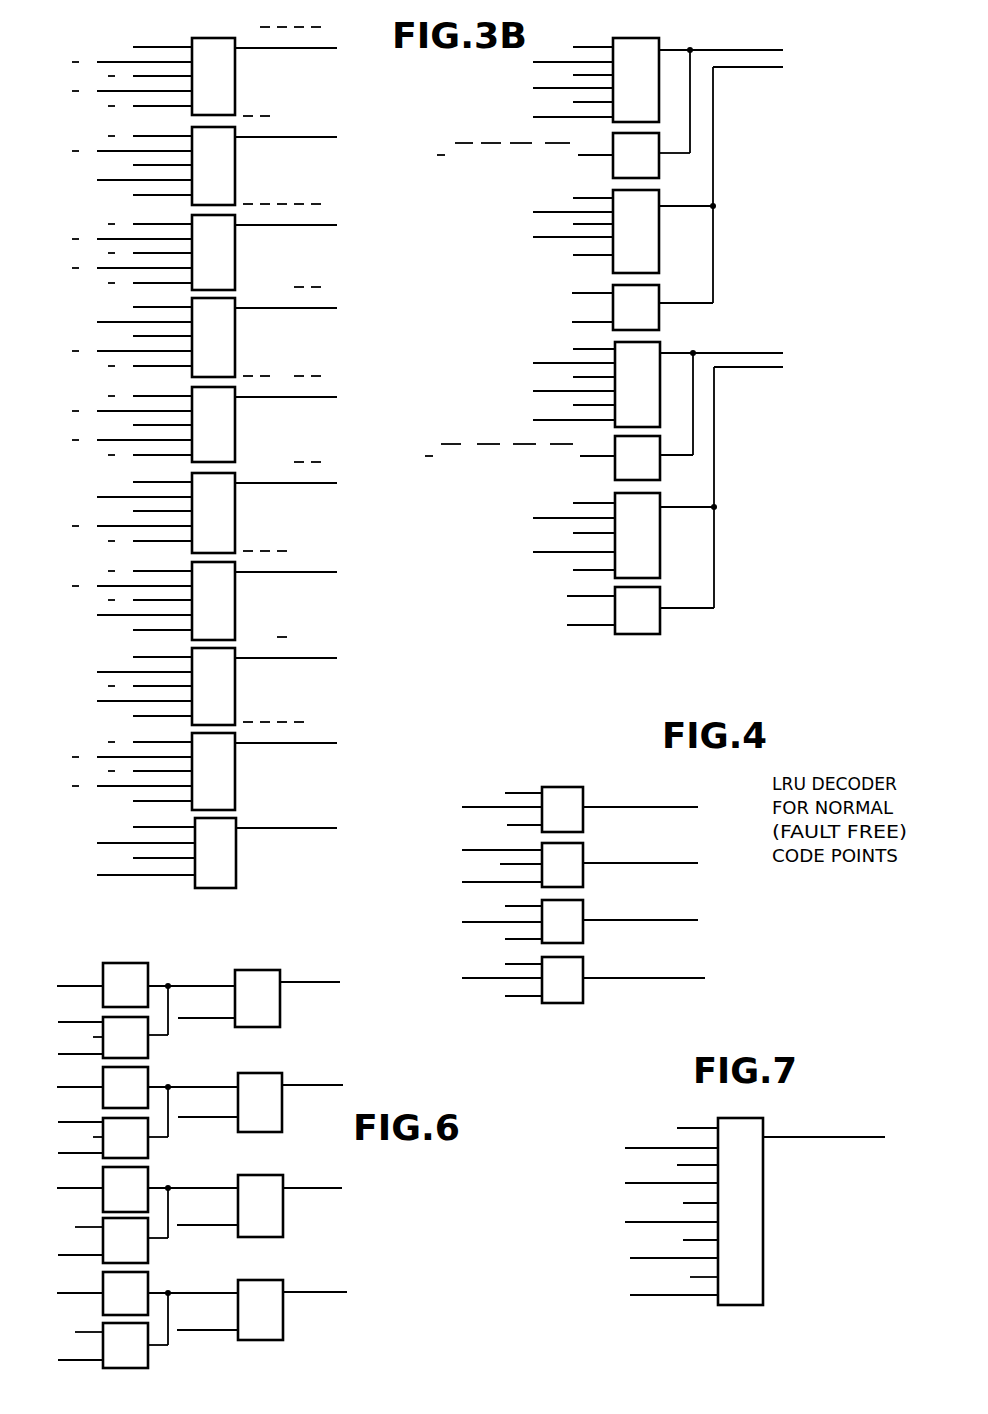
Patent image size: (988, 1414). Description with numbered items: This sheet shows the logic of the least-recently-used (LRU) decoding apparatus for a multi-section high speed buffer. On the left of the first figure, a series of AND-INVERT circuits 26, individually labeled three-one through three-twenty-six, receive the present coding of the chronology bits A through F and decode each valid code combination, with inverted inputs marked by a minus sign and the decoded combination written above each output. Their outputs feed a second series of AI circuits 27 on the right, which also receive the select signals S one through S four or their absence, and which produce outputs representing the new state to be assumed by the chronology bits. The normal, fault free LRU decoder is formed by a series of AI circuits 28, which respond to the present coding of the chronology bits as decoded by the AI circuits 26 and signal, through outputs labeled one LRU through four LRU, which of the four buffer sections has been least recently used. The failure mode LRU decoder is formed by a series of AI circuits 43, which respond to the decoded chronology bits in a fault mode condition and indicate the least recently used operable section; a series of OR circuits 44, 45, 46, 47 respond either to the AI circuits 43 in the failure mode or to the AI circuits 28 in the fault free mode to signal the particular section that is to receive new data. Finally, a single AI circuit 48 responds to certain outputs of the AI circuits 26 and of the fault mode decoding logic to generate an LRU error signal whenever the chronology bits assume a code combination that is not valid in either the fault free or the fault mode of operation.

In FIG. 3B, the AND-INVERT circuits 26 is at (186, 32).
In FIG. 3B, the AND-INVERT circuits 27 is at (650, 32).
In FIG. 4, the AND-INVERT circuits 28 is at (544, 772).
In FIG. 6, the AND-INVERT circuits 43 is at (74, 950).
In FIG. 6, the OR circuit 44 is at (278, 997).
In FIG. 6, the OR circuit 45 is at (281, 1100).
In FIG. 6, the OR circuit 46 is at (282, 1203).
In FIG. 6, the OR circuit 47 is at (282, 1305).
In FIG. 7, the AND-INVERT circuit 48 is at (758, 1223).